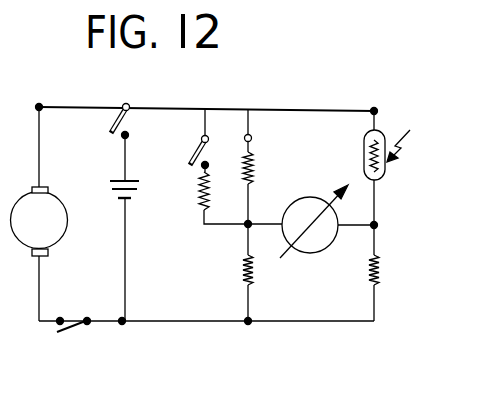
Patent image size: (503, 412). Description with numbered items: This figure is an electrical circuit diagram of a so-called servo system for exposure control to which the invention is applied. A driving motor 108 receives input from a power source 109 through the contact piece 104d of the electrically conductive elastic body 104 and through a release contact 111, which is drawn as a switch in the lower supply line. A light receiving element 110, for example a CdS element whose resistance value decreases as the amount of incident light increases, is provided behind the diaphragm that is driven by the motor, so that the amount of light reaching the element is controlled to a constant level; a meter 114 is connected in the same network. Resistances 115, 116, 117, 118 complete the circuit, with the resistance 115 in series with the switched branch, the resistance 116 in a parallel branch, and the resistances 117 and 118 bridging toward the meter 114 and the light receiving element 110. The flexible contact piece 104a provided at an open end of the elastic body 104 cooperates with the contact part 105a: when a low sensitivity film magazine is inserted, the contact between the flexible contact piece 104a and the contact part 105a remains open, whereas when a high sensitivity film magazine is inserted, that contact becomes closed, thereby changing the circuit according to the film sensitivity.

The elastic body 104 is at (300, 108).
The flexible contact piece 104a is at (196, 143).
The contact piece 104d is at (114, 119).
The contact part 105a is at (200, 172).
The driving motor 108 is at (63, 234).
The power source 109 is at (113, 177).
The light receiving element 110 is at (363, 153).
The release contact 111 is at (78, 327).
The meter 114 is at (312, 256).
The resistance 115 is at (198, 207).
The resistance 116 is at (256, 168).
The resistance 117 is at (380, 270).
The resistance 118 is at (243, 268).